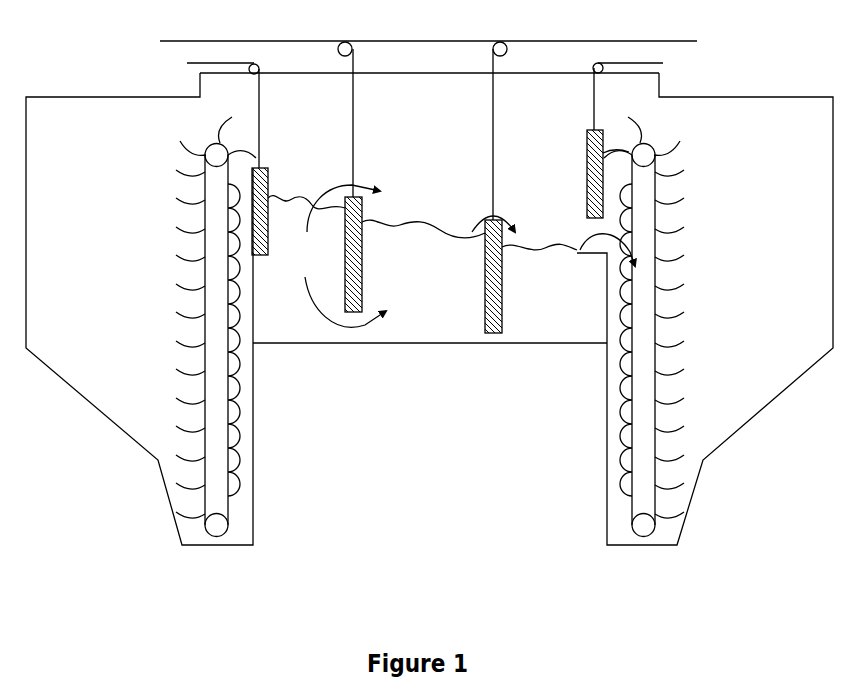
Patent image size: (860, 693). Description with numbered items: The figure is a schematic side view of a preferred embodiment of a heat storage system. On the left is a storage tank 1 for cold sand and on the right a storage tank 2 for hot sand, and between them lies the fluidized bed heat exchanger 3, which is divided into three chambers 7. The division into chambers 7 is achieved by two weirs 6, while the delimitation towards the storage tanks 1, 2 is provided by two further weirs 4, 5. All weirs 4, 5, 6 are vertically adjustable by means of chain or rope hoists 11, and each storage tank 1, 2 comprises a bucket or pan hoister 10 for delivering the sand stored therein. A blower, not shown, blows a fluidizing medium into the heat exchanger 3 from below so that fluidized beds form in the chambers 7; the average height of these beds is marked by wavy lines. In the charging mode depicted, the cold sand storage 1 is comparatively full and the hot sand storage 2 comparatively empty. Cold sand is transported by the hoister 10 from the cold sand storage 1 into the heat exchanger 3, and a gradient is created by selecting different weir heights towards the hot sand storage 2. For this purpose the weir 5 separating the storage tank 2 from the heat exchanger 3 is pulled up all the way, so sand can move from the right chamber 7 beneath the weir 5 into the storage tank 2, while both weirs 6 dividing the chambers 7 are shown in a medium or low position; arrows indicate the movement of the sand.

The storage tank for cold sand 1 is at (118, 398).
The storage tank for hot sand 2 is at (745, 398).
The fluidized bed heat exchanger 3 is at (409, 118).
The weir 4 is at (258, 252).
The weir 5 is at (590, 215).
The weirs 6 is at (485, 302).
The chambers 7 is at (488, 401).
The bucket or pan hoister 10 is at (622, 447).
The chain or rope hoists 11 is at (259, 90).